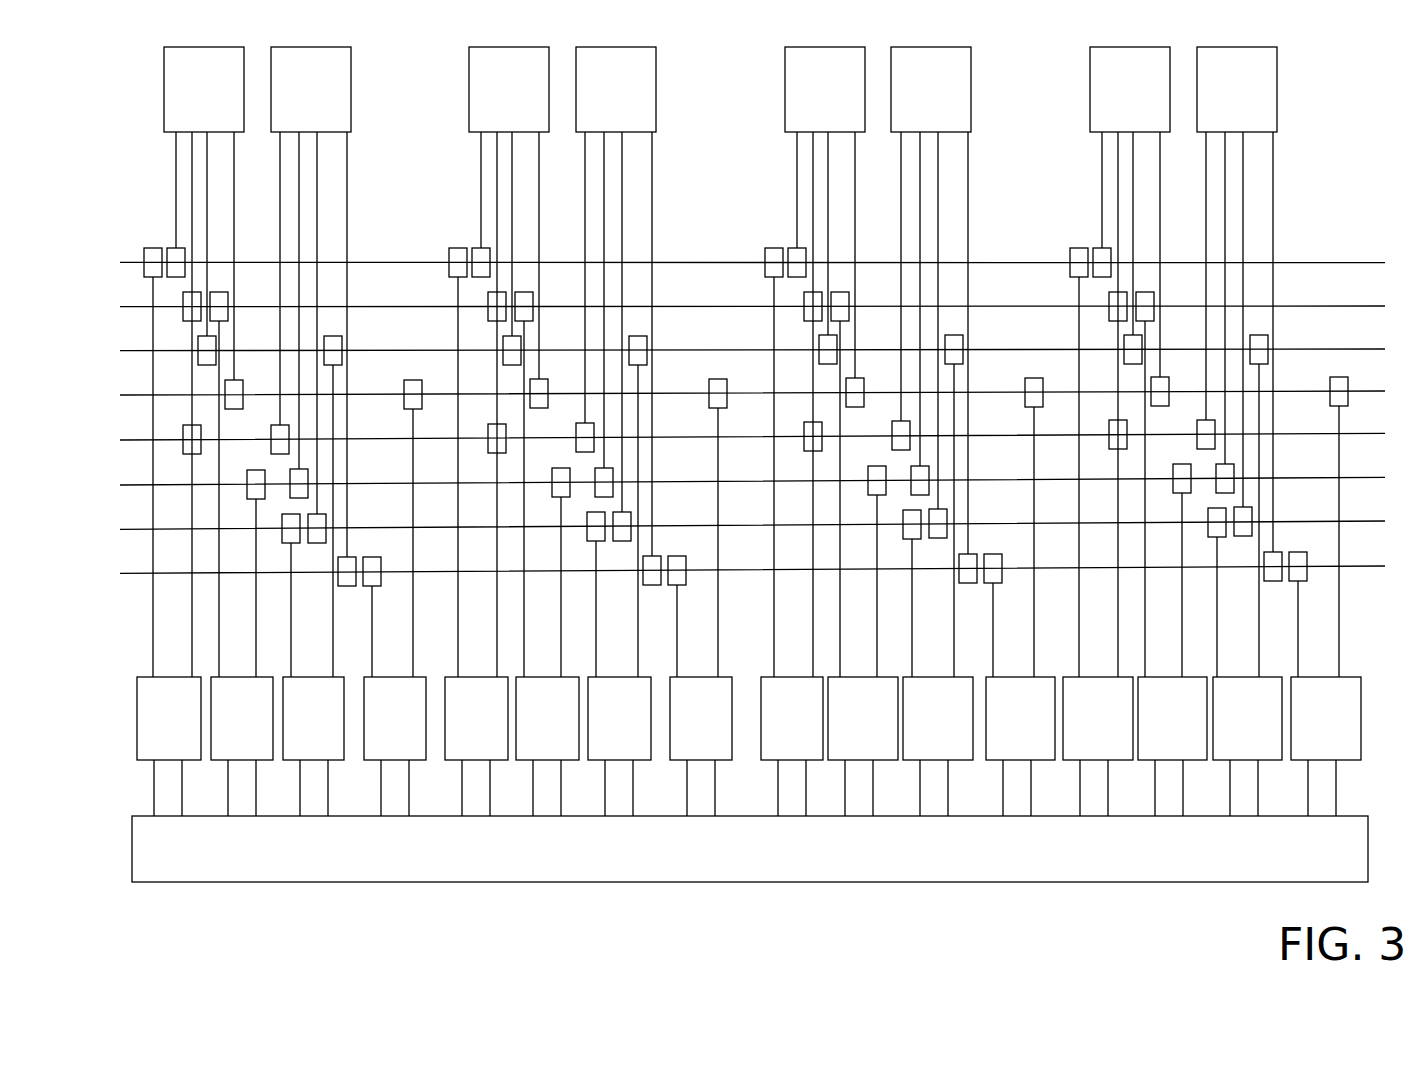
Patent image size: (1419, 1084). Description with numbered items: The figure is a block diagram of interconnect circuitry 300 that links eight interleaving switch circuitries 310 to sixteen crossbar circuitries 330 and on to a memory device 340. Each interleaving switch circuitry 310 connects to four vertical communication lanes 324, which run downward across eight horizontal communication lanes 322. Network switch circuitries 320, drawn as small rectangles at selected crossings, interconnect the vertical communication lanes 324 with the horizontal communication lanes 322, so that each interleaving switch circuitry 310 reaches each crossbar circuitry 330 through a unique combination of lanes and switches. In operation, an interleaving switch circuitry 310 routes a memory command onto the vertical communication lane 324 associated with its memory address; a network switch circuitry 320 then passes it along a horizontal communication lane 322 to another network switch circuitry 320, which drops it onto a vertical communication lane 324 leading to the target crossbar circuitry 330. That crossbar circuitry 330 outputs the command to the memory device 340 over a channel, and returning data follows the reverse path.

The interconnect circuitry 300 is at (1320, 94).
The interleaving switch circuitry 310 is at (1253, 101).
The network switch circuitry 320 is at (722, 462).
The horizontal communication lane 322 is at (764, 399).
The vertical communication lane 324 is at (714, 403).
The crossbar circuitry 330 is at (749, 746).
The memory device 340 is at (769, 861).